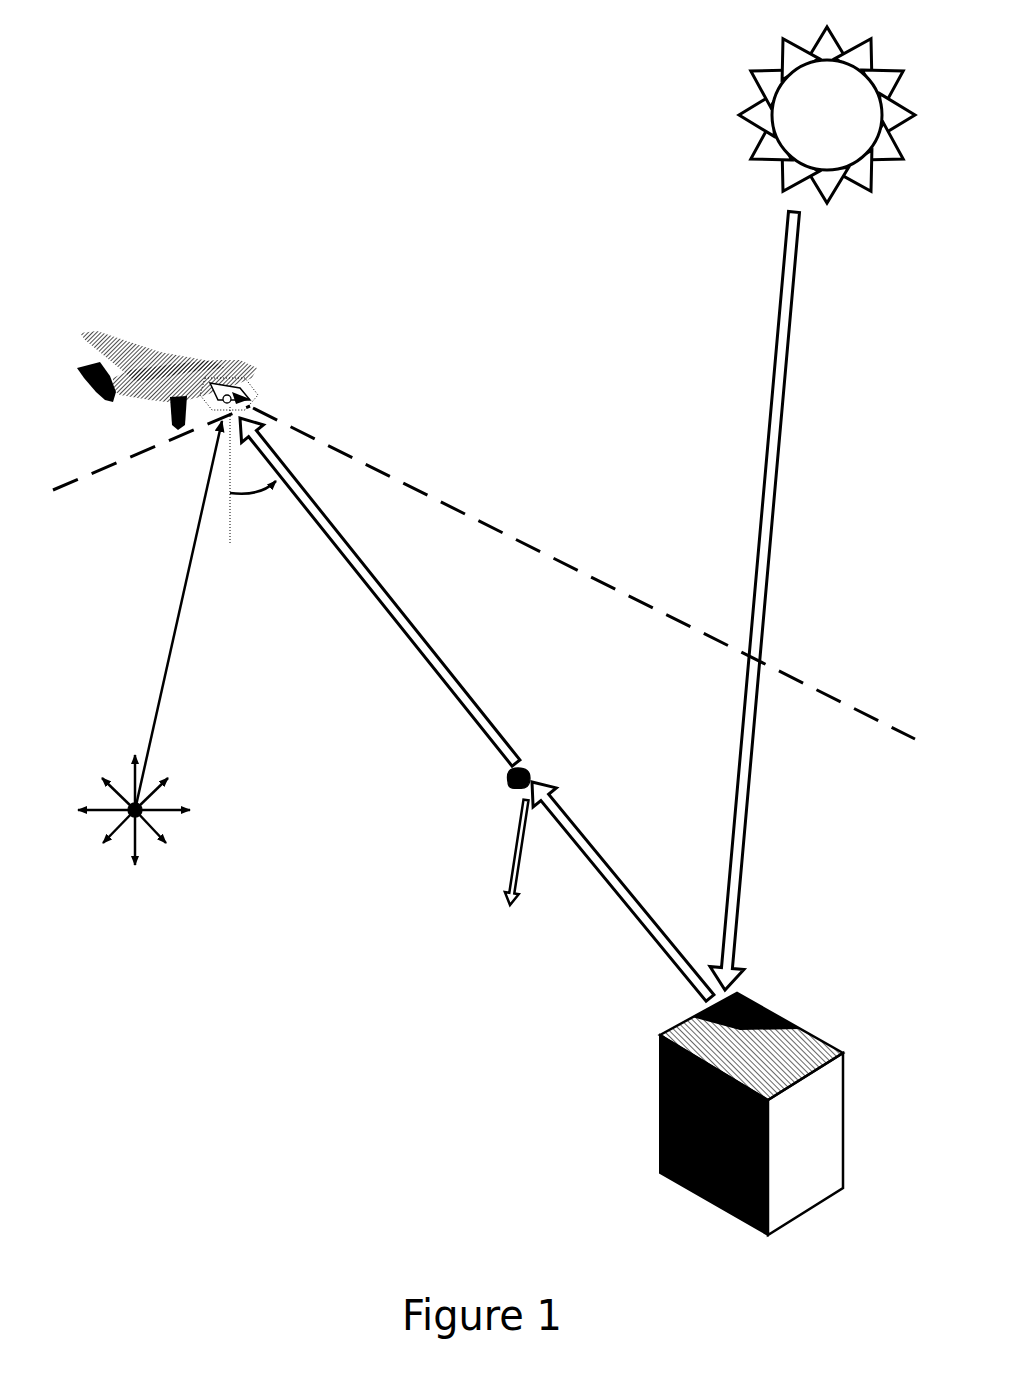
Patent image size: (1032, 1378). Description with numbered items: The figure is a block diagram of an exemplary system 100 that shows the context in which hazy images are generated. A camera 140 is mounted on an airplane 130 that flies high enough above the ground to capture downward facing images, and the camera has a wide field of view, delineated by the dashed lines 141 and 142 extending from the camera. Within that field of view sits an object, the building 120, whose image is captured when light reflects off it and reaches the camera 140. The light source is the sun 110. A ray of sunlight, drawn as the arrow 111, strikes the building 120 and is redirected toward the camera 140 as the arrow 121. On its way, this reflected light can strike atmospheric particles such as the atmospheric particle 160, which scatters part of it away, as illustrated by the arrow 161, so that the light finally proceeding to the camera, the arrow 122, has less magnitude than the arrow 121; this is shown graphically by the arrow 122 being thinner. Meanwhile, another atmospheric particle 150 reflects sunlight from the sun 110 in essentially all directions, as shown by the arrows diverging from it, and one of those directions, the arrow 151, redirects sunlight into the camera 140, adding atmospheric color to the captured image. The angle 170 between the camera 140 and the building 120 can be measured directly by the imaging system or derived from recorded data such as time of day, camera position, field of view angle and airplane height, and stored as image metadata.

The system 100 is at (205, 62).
The sun 110 is at (827, 115).
The arrow 111 is at (778, 470).
The building 120 is at (780, 1013).
The arrow 121 is at (587, 835).
The arrow 122 is at (460, 680).
The airplane 130 is at (213, 362).
The camera 140 is at (250, 392).
The dashed line 141 is at (130, 455).
The dashed line 142 is at (370, 462).
The atmospheric particle 150 is at (125, 812).
The arrow 151 is at (178, 628).
The atmospheric particle 160 is at (505, 780).
The arrow 161 is at (510, 867).
The angle 170 is at (253, 506).